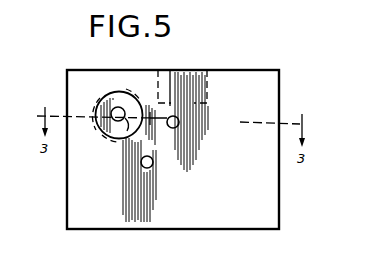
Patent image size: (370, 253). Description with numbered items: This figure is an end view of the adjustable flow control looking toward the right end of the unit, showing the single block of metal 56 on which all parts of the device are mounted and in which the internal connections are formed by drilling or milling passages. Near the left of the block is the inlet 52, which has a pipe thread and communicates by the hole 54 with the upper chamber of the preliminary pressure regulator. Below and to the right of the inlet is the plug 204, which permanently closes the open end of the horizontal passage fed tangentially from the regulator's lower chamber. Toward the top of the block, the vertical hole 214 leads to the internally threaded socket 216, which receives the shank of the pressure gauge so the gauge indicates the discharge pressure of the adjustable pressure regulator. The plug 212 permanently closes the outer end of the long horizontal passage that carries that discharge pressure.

The block of metal 56 is at (247, 195).
The inlet 52 is at (117, 115).
The hole 54 is at (116, 123).
The vertical hole 214 is at (166, 67).
The internally threaded socket 216 is at (214, 58).
The plug 212 is at (178, 137).
The plug 204 is at (149, 168).